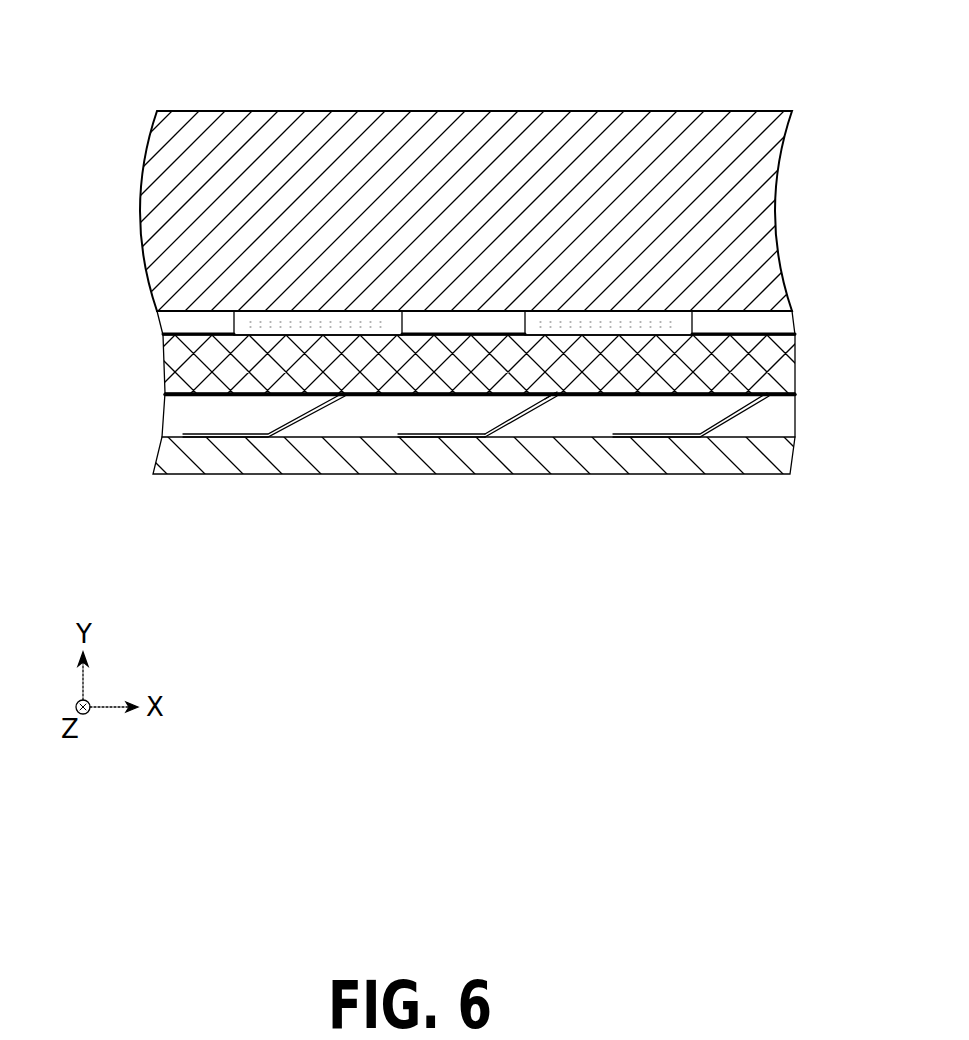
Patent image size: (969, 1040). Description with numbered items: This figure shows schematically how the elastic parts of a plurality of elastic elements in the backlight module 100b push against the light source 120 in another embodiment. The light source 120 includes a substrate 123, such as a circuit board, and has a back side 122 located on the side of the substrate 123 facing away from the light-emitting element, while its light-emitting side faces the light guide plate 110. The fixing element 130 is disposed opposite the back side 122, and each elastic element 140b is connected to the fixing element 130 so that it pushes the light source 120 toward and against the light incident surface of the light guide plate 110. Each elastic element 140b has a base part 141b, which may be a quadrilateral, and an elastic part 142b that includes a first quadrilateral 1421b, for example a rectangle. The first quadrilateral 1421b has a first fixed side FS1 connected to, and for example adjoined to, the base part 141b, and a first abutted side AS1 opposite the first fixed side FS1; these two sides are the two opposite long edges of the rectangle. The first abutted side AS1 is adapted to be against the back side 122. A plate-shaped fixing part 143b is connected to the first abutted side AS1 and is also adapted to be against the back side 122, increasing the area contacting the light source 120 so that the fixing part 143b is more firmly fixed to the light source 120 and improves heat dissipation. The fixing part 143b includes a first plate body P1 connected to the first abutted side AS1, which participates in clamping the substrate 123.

The backlight module 100b is at (102, 36).
The light guide plate 110 is at (752, 220).
The light source 120 is at (452, 459).
The back side 122 is at (678, 396).
The substrate 123 is at (632, 365).
The fixing element 130 is at (740, 460).
The elastic element 140b is at (476, 483).
The base part 141b is at (465, 437).
The elastic part 142b is at (476, 225).
The first quadrilateral 1421b is at (512, 393).
The fixing part 143b is at (540, 207).
The first plate body P1 is at (567, 393).
The first abutted side AS1 is at (487, 435).
The first fixed side FS1 is at (553, 393).